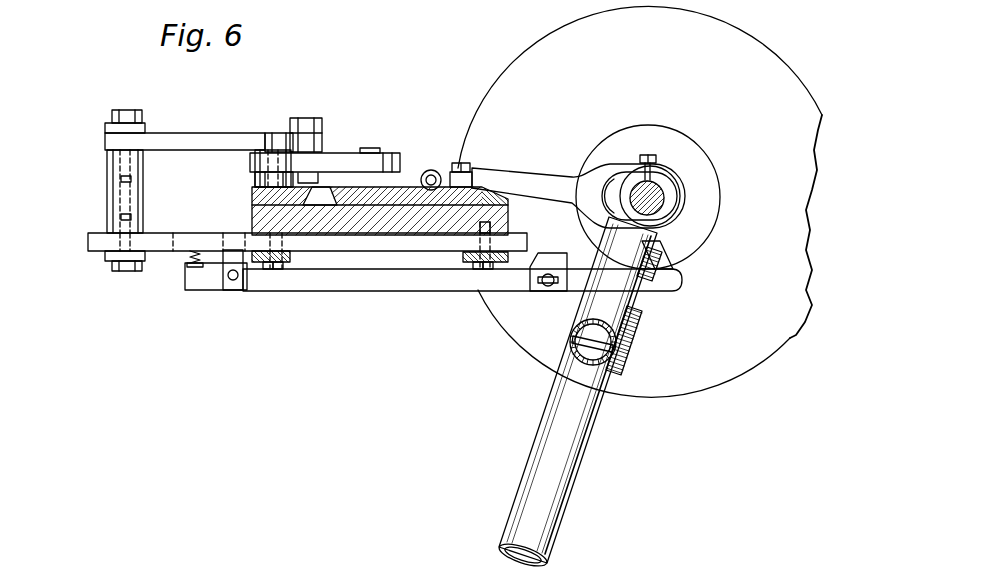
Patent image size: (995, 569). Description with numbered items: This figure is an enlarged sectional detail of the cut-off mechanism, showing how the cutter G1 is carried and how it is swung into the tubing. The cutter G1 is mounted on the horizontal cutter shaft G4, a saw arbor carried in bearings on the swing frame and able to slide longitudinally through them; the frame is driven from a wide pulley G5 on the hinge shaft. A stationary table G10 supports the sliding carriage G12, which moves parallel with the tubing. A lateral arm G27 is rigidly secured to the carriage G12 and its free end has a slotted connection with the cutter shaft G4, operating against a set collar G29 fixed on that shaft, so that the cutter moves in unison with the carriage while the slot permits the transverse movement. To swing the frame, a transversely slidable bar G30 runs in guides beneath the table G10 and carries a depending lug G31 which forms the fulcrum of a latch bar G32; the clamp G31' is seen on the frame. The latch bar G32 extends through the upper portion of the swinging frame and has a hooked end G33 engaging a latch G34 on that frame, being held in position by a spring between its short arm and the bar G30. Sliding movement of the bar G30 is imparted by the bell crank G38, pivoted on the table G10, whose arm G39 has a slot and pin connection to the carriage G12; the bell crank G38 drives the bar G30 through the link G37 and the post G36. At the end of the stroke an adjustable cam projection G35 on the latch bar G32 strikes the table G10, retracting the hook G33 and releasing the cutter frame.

The cutter G1 is at (694, 376).
The cutter shaft G4 is at (664, 186).
The wide pulley G5 is at (584, 441).
The stationary table G10 is at (251, 214).
The sliding carriage G12 is at (322, 207).
The lateral arm G27 is at (538, 150).
The set collar G29 is at (664, 198).
The transversely slidable bar G30 is at (365, 244).
The depending lug G31 is at (216, 295).
The clamp ring G31' is at (556, 364).
The latch bar G32 is at (445, 283).
The hooked end G33 is at (684, 268).
The latch G34 is at (636, 331).
The adjustable cam projection G35 is at (534, 292).
The post G36 is at (106, 192).
The link G37 is at (198, 142).
The bell crank G38 is at (253, 166).
The bell crank arm G39 is at (458, 165).